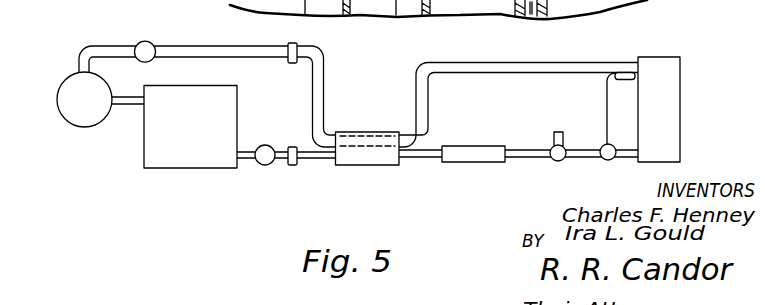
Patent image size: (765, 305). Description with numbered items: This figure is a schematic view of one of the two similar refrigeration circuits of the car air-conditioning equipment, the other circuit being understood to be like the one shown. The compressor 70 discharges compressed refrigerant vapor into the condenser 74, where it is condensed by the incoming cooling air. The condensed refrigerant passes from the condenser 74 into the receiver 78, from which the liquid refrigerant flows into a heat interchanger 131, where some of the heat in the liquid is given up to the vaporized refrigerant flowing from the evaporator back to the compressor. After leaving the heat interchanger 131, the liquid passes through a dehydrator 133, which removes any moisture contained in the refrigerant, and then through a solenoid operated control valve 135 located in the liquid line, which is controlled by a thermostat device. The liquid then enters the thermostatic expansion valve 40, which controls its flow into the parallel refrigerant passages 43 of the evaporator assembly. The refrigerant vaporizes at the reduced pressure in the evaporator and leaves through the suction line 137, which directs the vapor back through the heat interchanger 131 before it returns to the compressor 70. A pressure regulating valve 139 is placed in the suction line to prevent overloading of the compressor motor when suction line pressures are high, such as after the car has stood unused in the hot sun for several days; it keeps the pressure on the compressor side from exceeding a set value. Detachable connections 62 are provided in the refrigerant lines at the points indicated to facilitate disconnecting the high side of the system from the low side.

The thermostatic expansion valve 40 is at (603, 147).
The parallel refrigerant passages 43 is at (672, 142).
The detachable connections 62 is at (299, 44).
The motor-compressor unit 70 is at (88, 118).
The condenser 74 is at (237, 117).
The receiver 78 is at (262, 163).
The heat interchanger 131 is at (372, 132).
The dehydrator 133 is at (459, 144).
The solenoid operated control valve 135 is at (557, 132).
The suction line 137 is at (492, 62).
The pressure regulating valve 139 is at (147, 49).